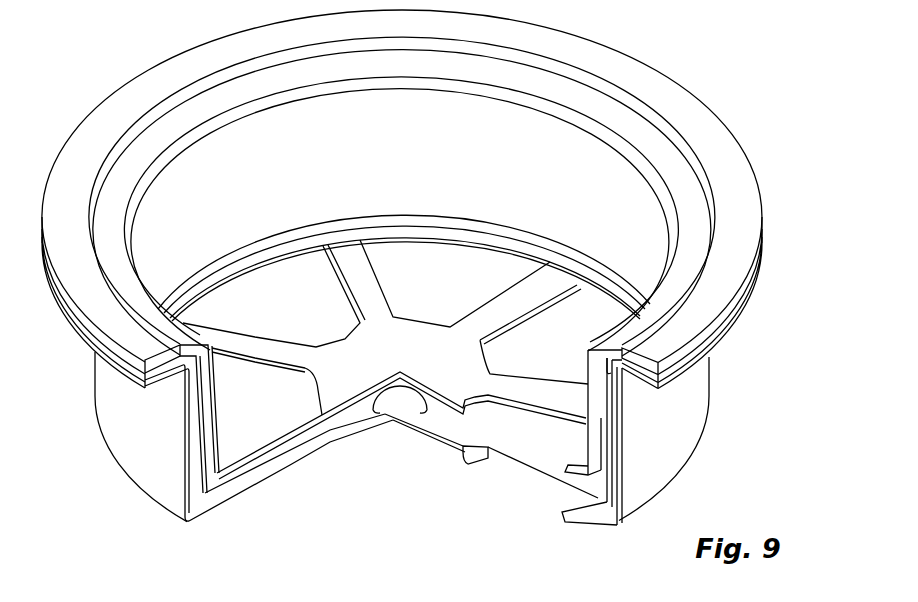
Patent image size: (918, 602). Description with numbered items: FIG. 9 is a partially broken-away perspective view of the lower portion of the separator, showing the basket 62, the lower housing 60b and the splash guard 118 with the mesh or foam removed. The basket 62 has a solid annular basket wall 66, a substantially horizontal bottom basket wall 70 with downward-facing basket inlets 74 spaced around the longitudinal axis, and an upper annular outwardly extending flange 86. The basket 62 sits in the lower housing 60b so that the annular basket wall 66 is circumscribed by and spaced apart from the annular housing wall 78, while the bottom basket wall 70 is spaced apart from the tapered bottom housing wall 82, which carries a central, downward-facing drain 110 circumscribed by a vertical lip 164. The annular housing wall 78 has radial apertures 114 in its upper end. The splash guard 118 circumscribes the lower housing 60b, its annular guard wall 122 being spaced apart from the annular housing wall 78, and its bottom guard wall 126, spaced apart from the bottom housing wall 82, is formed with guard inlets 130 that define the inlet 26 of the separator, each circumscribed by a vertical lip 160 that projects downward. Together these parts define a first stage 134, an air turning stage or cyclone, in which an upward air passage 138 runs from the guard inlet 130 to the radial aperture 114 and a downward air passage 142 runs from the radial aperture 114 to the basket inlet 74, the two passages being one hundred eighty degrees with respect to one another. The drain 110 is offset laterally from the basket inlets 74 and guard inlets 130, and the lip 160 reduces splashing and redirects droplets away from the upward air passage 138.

The guard inlet 130 is at (505, 458).
The radial aperture 114 is at (608, 392).
The upper annular outwardly extending flange 86 is at (678, 168).
The basket 62 is at (617, 180).
The annular basket wall 66 is at (545, 130).
The basket inlet 74 is at (430, 257).
The bottom basket wall 70 is at (350, 263).
The annular guard wall 122 is at (103, 377).
The splash guard 118 is at (133, 490).
The upward air passage 138 is at (188, 408).
The downward air passage 142 is at (207, 438).
The first stage 134 is at (167, 513).
The bottom guard wall 126 is at (257, 500).
The bottom housing wall 82 is at (340, 420).
The drain 110 is at (395, 418).
The vertical lip 164 is at (418, 420).
The inlet 26 is at (490, 455).
The lower housing 60b is at (608, 418).
The annular housing wall 78 is at (608, 459).
The vertical lip 160 is at (560, 528).